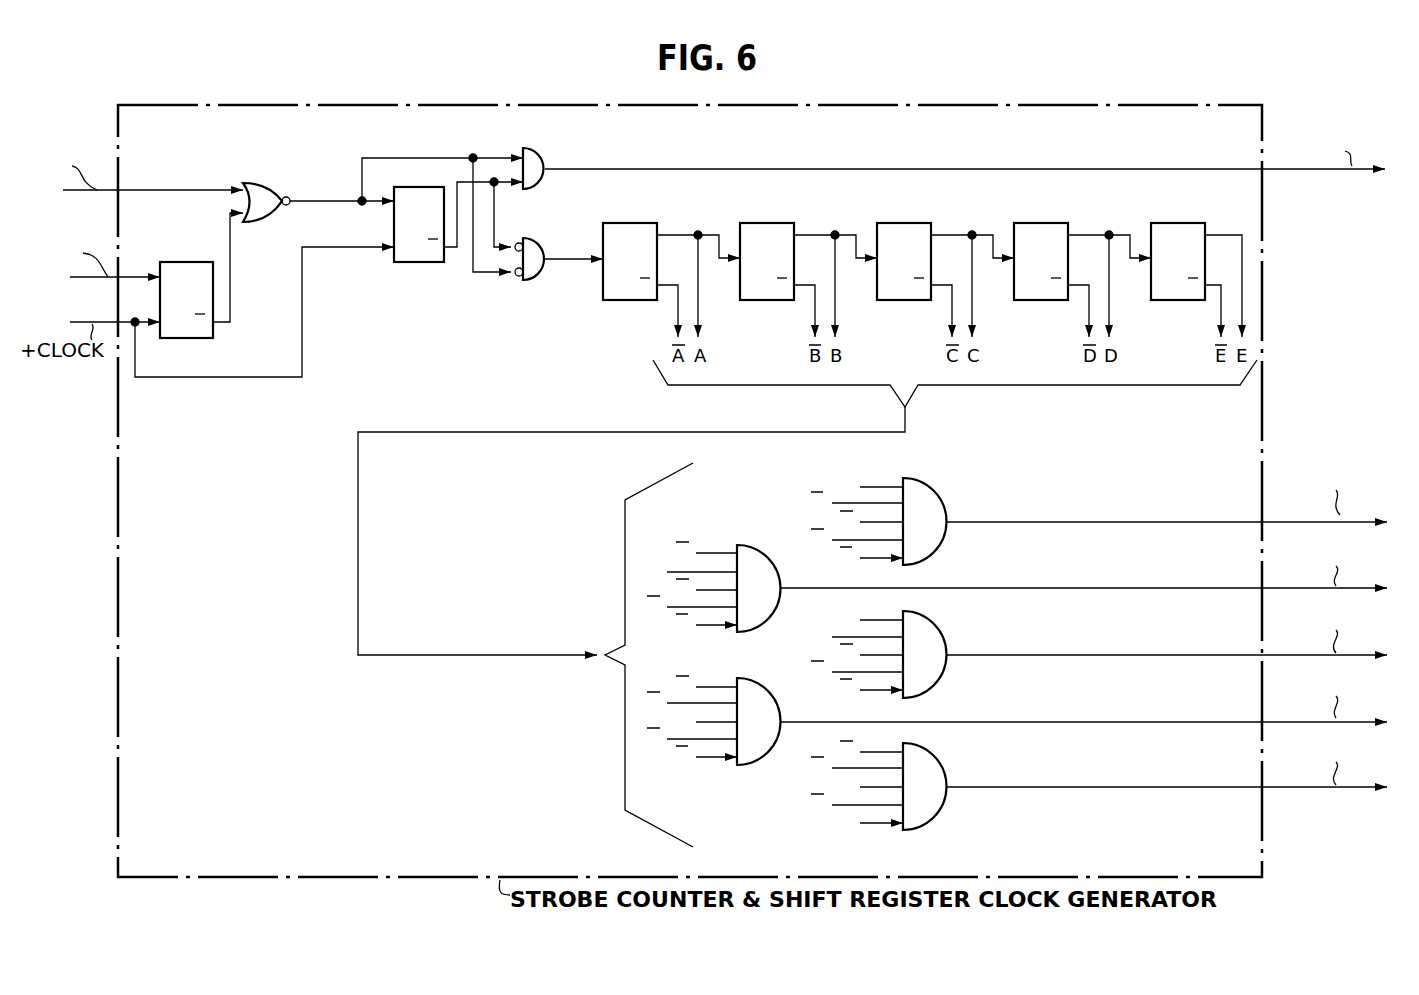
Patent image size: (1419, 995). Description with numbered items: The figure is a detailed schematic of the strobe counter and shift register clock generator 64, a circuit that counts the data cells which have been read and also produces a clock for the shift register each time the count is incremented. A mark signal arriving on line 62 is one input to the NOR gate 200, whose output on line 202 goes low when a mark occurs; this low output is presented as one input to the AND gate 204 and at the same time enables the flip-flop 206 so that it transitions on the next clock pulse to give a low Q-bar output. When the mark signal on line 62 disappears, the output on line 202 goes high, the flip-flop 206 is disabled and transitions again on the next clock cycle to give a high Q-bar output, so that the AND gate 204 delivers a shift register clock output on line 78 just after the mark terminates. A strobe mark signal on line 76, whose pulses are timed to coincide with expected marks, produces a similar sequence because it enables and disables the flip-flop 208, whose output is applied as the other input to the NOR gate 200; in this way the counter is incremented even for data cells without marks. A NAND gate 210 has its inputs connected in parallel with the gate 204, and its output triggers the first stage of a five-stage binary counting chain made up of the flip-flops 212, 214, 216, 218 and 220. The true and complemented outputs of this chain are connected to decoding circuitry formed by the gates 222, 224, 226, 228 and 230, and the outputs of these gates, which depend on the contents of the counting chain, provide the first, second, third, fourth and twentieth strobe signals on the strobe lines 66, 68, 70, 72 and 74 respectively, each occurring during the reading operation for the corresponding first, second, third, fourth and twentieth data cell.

The mark signal line 62 is at (96, 193).
The strobe counter and shift register clock generator 64 is at (118, 615).
The strobe-1 line 66 is at (1294, 521).
The strobe-2 line 68 is at (1296, 589).
The strobe-3 line 70 is at (1308, 656).
The strobe-4 line 72 is at (1312, 721).
The strobe-20 line 74 is at (1314, 787).
The strobe mark signal line 76 is at (70, 281).
The shift register clock output line 78 is at (1333, 172).
The NOR gate 200 is at (254, 184).
The NOR gate output line 202 is at (330, 186).
The AND gate 204 is at (540, 162).
The flip-flop 206 is at (394, 245).
The flip-flop 208 is at (180, 262).
The NAND gate 210 is at (535, 242).
The flip-flop 212 is at (627, 222).
The flip-flop 214 is at (764, 222).
The flip-flop 216 is at (901, 222).
The flip-flop 218 is at (1038, 222).
The flip-flop 220 is at (1175, 222).
The decoding gate 222 is at (935, 508).
The decoding gate 224 is at (760, 548).
The decoding gate 226 is at (935, 648).
The decoding gate 228 is at (755, 767).
The decoding gate 230 is at (940, 770).